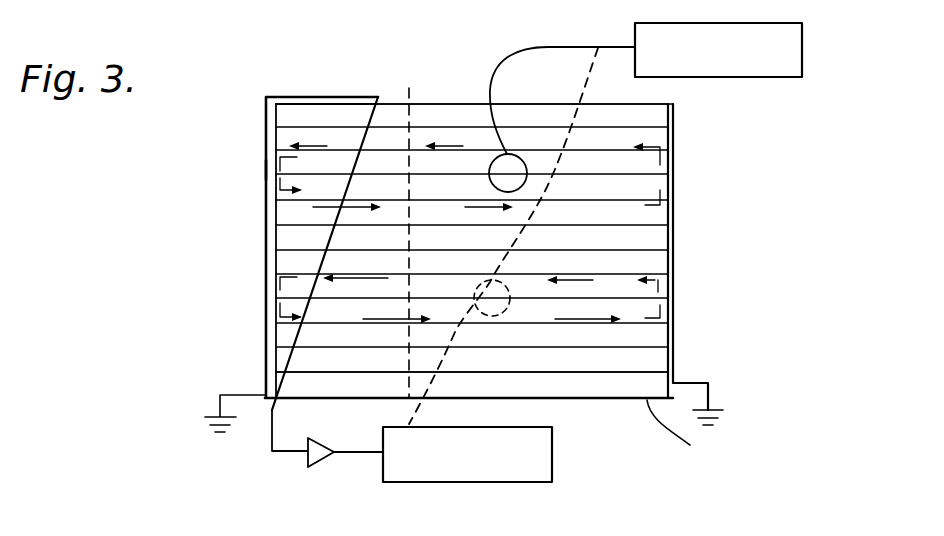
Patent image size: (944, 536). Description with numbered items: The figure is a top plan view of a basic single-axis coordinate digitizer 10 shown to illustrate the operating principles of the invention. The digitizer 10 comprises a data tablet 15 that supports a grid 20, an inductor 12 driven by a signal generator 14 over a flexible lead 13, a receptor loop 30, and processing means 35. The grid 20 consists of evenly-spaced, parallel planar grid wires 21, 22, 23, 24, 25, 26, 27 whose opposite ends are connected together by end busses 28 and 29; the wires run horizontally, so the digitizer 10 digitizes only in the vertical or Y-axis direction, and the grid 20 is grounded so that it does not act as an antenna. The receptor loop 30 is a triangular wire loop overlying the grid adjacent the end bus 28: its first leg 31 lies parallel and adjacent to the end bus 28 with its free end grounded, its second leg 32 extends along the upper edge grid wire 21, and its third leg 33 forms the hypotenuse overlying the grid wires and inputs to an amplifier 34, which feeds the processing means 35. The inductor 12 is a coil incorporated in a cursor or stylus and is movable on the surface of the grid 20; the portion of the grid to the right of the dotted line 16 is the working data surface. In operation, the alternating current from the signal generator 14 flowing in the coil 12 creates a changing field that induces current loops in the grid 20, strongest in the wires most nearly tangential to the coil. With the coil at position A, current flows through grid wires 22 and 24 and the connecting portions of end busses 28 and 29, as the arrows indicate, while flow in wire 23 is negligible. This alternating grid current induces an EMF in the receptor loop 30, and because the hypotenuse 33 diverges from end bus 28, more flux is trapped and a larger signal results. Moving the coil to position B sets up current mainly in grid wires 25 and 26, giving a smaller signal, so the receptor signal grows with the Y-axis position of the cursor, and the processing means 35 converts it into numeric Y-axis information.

The coordinate digitizer 10 is at (228, 264).
The inductor 12 is at (492, 158).
The flexible lead 13 is at (540, 45).
The signal generator 14 is at (802, 78).
The data tablet 15 is at (561, 404).
The dotted line 16 is at (408, 88).
The grid 20 is at (608, 404).
The upper edge grid wire 21 is at (632, 84).
The grid wire 22 is at (617, 149).
The grid wire 23 is at (640, 174).
The grid wire 24 is at (631, 204).
The grid wire 25 is at (632, 276).
The grid wire 26 is at (632, 324).
The grid wire 27 is at (647, 400).
The end bus 28 is at (276, 232).
The end bus 29 is at (672, 258).
The receptor loop 30 is at (294, 90).
The first leg 31 is at (266, 168).
The second leg 32 is at (323, 97).
The third leg 33 is at (299, 337).
The amplifier 34 is at (318, 466).
The processing means 35 is at (465, 483).